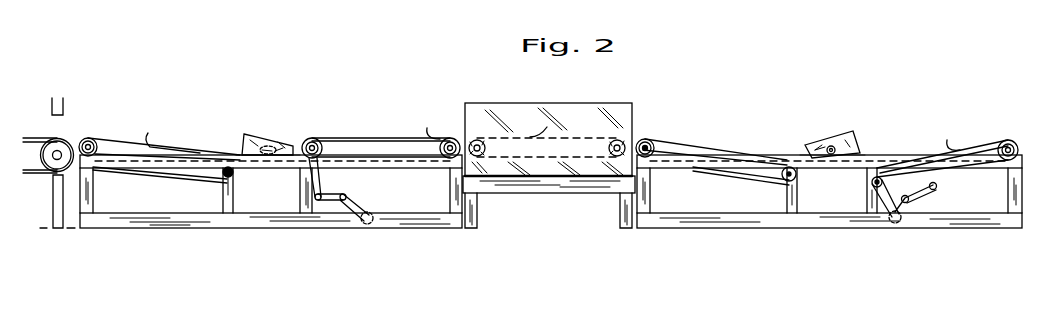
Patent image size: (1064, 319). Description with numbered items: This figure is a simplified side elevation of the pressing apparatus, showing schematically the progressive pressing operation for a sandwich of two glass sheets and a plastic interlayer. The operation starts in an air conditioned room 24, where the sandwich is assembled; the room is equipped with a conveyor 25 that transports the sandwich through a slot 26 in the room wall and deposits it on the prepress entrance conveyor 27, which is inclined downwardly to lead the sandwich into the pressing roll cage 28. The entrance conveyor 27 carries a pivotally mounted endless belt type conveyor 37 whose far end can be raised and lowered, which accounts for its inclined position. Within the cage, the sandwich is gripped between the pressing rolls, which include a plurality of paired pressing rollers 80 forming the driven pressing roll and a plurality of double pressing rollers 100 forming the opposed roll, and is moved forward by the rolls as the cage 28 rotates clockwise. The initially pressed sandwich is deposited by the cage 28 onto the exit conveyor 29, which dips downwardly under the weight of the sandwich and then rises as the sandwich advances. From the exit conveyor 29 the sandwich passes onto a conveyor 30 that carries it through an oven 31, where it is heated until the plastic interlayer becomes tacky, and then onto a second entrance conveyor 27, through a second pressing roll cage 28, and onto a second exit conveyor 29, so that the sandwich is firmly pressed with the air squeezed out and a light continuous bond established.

The air conditioned room 24 is at (38, 98).
The conveyor 25 is at (64, 138).
The slot 26 is at (61, 123).
The entrance conveyor 27 is at (160, 120).
The pressing roll cage 28 is at (266, 127).
The exit conveyor 29 is at (369, 128).
The conveyor 30 is at (570, 137).
The oven 31 is at (500, 98).
The endless belt type conveyor 37 is at (117, 141).
The paired pressing rollers 80 is at (252, 135).
The double pressing rollers 100 is at (284, 146).